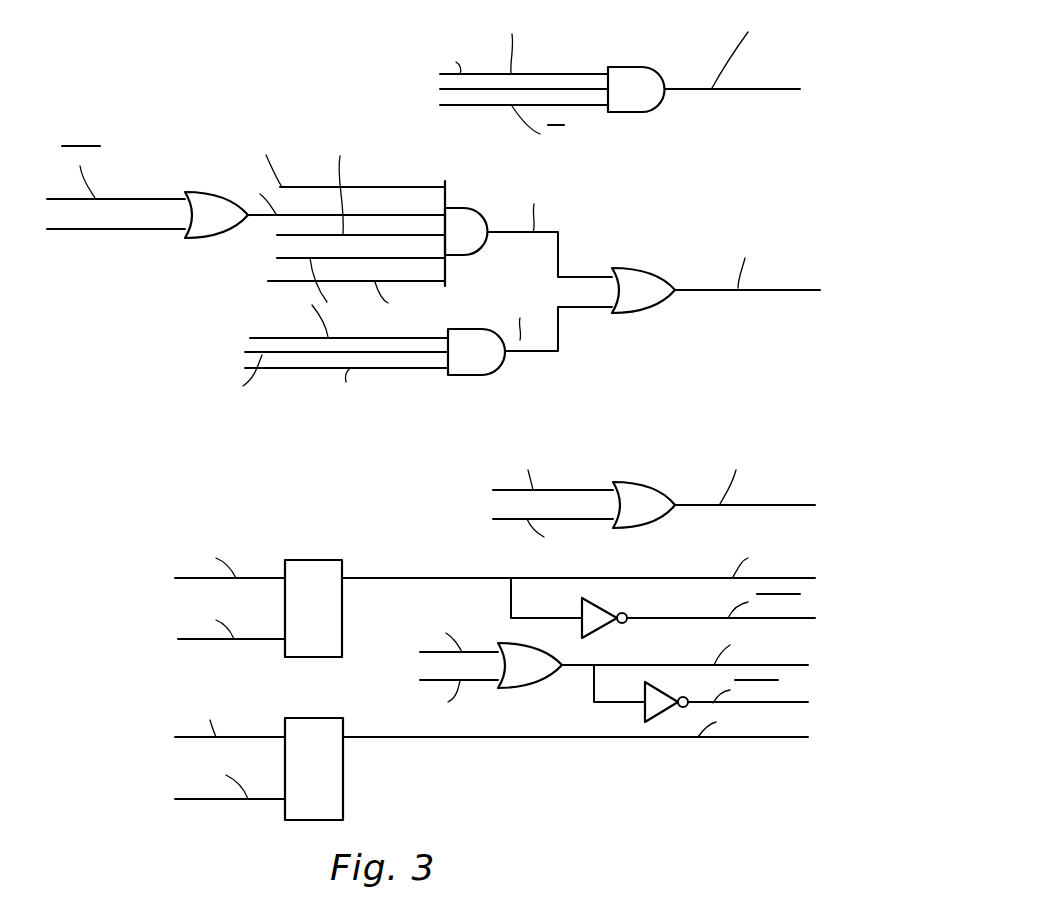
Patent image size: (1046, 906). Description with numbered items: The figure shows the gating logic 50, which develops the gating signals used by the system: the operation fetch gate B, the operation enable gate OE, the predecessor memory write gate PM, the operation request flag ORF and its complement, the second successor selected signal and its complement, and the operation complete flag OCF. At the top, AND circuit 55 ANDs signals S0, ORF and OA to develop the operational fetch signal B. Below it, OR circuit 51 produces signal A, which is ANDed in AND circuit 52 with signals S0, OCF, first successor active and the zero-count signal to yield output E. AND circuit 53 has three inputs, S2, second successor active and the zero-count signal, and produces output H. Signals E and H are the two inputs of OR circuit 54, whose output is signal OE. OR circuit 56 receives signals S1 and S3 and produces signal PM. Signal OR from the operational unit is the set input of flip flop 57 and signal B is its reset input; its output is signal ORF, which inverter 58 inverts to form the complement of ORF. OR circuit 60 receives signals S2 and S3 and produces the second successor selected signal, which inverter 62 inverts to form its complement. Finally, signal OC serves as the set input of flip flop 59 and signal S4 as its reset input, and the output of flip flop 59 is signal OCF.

The gating logic 50 is at (142, 470).
The OR circuit 51 is at (213, 205).
The AND circuit 52 is at (470, 216).
The AND circuit 53 is at (462, 364).
The OR circuit 54 is at (628, 276).
The AND circuit 55 is at (646, 70).
The OR circuit 56 is at (640, 494).
The flip flop 57 is at (314, 570).
The inverter 58 is at (607, 610).
The flip flop 59 is at (318, 722).
The OR circuit 60 is at (518, 678).
The inverter 62 is at (640, 711).